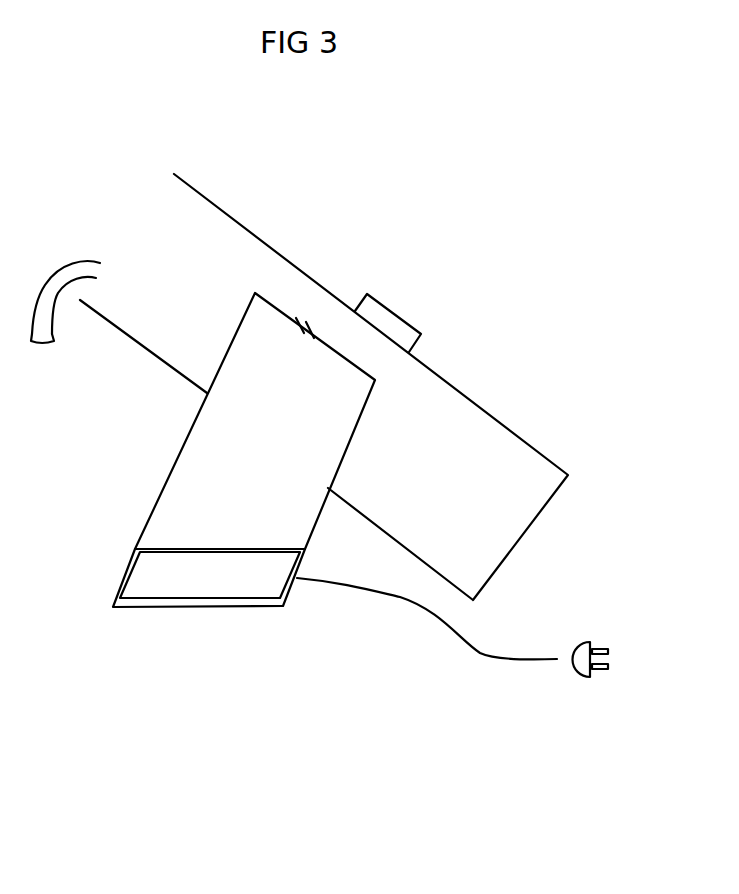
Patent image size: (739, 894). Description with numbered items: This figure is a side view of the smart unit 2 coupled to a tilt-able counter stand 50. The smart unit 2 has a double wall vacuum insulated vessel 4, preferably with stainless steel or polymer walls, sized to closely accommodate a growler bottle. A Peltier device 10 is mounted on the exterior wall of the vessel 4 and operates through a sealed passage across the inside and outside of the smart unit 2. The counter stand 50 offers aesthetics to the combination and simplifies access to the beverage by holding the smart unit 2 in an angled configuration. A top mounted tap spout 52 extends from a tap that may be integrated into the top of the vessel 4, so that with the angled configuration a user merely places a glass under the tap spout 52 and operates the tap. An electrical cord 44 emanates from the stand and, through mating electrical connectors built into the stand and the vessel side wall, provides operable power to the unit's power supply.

The smart unit 2 is at (352, 177).
The double wall vacuum insulated vessel 4 is at (506, 421).
The Peltier device 10 is at (377, 300).
The electrical cord 44 is at (540, 662).
The counter stand 50 is at (167, 589).
The tap spout 52 is at (50, 346).